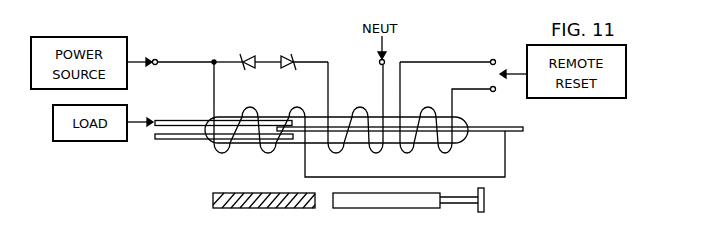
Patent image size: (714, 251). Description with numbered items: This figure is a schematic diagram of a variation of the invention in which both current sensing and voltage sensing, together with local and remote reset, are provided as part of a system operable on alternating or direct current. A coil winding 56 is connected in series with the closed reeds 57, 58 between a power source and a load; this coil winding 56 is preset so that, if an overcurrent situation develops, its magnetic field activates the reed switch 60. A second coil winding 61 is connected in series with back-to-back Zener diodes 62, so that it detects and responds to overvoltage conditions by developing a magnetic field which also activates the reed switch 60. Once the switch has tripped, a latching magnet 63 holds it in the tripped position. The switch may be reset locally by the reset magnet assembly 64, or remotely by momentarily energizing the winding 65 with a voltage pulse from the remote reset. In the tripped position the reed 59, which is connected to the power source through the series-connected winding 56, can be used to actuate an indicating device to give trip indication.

The coil winding 56 is at (257, 92).
The closed reed 57 is at (515, 131).
The closed reed 58 is at (178, 101).
The reed 59 is at (186, 141).
The reed switch 60 is at (463, 117).
The coil winding 61 is at (366, 87).
The back-to-back Zener diodes 62 is at (290, 54).
The latching magnet 63 is at (250, 209).
The reset magnet assembly 64 is at (393, 209).
The winding 65 is at (430, 108).